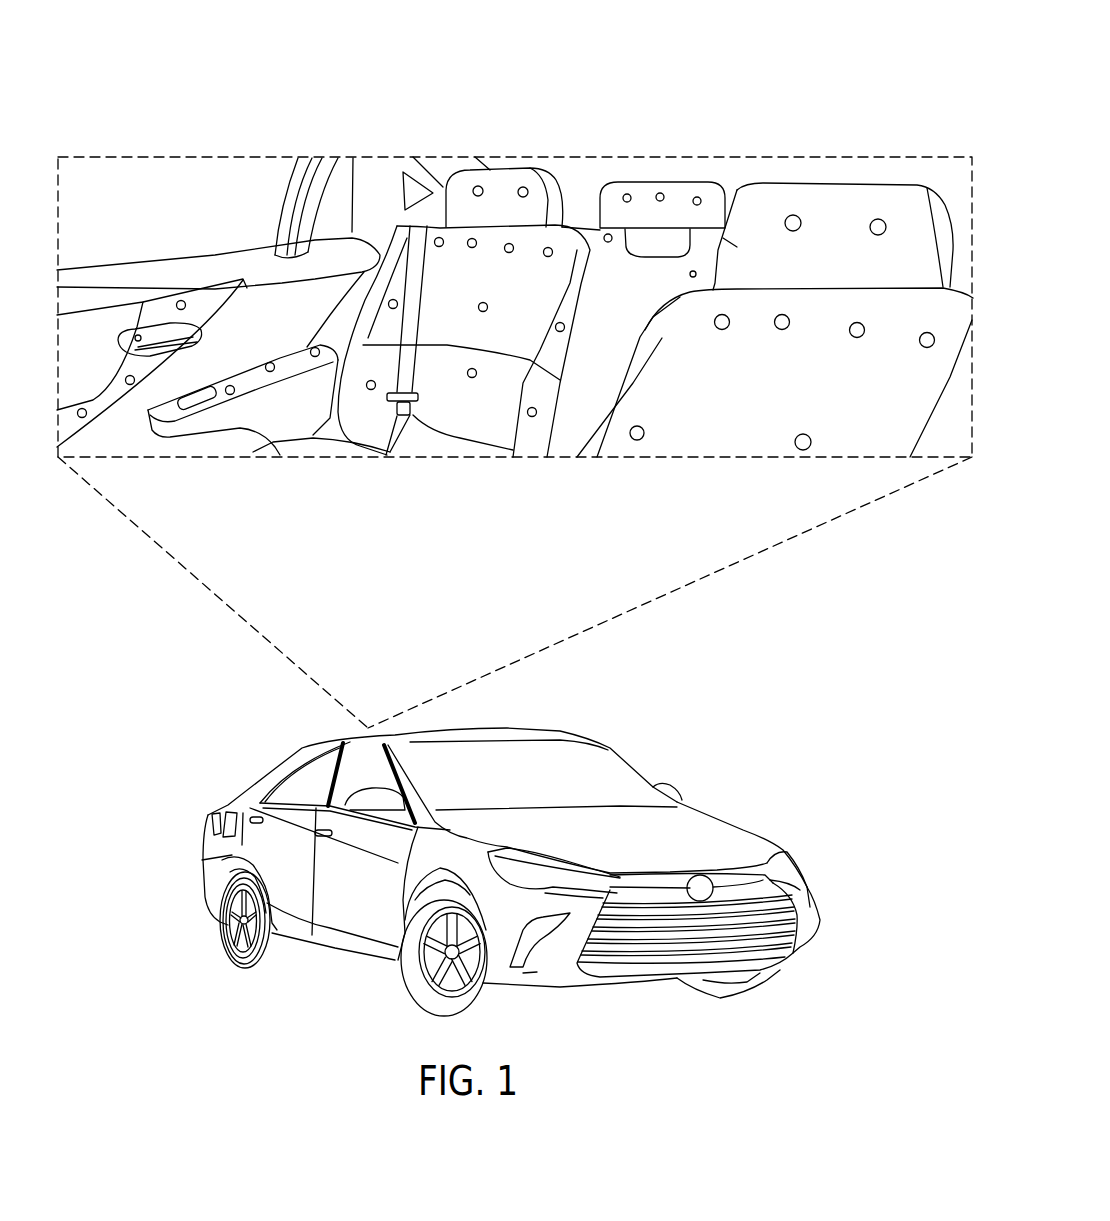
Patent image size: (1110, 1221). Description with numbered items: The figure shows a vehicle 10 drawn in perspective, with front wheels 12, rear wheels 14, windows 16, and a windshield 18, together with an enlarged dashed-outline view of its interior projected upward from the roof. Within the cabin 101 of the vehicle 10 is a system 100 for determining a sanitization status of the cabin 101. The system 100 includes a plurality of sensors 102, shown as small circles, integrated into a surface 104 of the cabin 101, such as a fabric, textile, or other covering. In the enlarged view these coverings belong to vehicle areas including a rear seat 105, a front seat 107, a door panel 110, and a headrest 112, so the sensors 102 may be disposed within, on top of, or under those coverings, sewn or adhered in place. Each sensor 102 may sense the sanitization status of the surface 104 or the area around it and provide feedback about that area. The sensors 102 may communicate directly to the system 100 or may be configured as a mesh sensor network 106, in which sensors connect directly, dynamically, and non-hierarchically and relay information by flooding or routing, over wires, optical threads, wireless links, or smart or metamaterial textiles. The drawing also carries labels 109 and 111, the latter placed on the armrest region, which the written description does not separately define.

The vehicle 10 is at (660, 720).
The front wheels 12 is at (752, 985).
The rear wheels 14 is at (267, 960).
The windows 16 is at (377, 757).
The windshield 18 is at (594, 762).
The system 100 is at (392, 92).
The cabin 101 is at (850, 140).
The sensors 102 is at (690, 275).
The surface 104 is at (657, 304).
The rear seat 105 is at (480, 294).
The mesh sensor network 106 is at (709, 180).
The front seat 107 is at (741, 440).
The rear seating position 109 is at (630, 337).
The door panel 110 is at (168, 297).
The armrest 111 is at (280, 360).
The headrest 112 is at (501, 182).